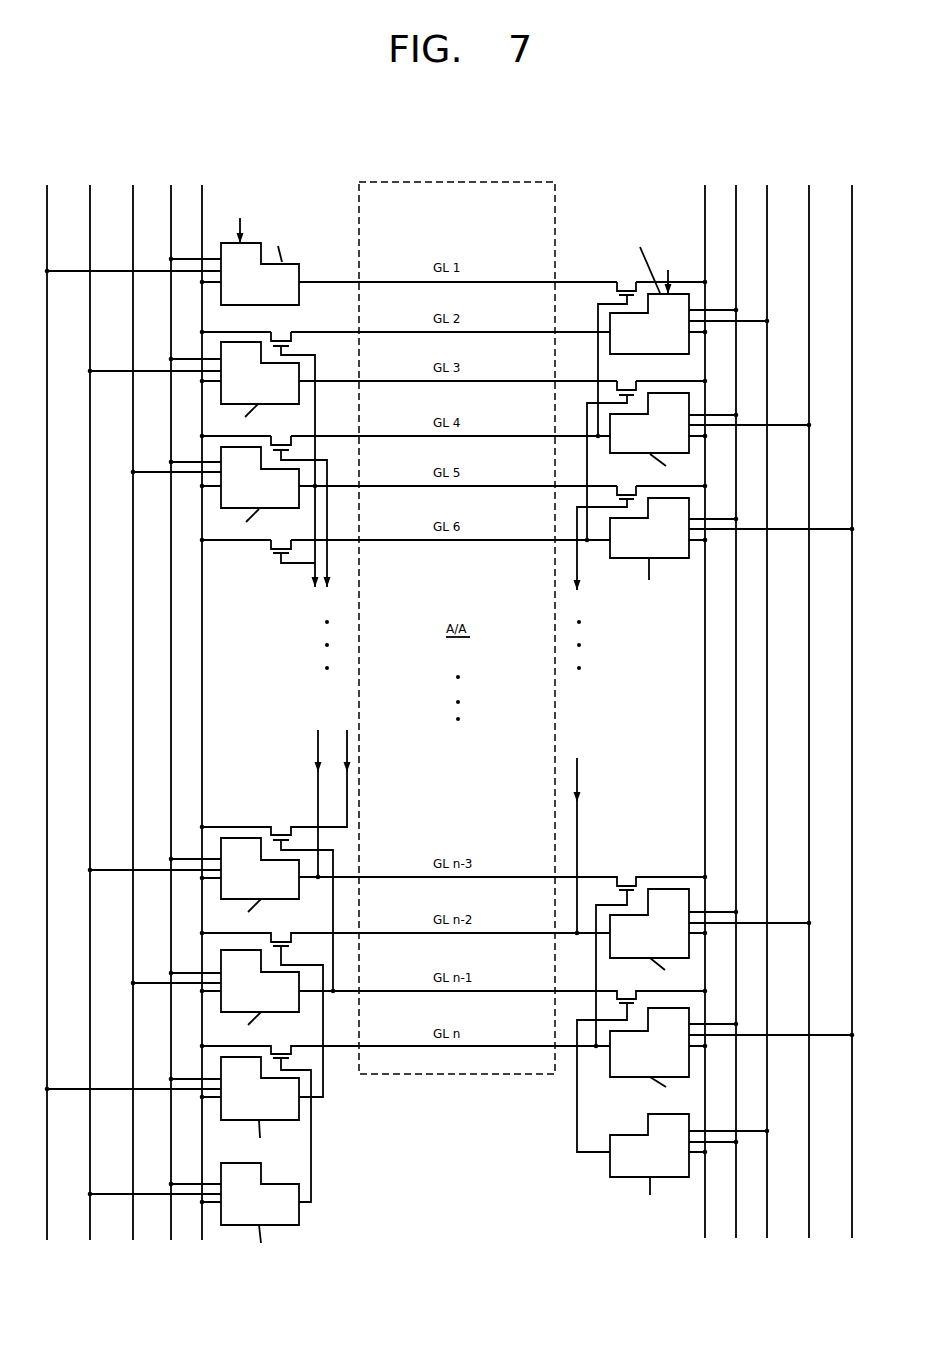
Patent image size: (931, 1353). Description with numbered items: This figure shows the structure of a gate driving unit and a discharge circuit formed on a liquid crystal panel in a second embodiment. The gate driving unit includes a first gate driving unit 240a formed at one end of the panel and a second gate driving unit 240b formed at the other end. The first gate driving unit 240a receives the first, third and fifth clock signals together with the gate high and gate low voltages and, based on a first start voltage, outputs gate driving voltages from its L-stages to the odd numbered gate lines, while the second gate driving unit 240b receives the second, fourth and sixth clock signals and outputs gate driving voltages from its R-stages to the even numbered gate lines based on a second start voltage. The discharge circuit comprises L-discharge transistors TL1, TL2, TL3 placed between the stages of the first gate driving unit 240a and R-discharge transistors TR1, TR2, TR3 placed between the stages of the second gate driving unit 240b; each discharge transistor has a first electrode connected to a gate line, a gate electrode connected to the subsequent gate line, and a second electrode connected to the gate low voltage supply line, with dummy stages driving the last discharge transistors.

The first gate driving unit 240a is at (212, 677).
The second gate driving unit 240b is at (695, 677).
The L-discharge transistor TL1 is at (292, 451).
The L-discharge transistor TL2 is at (298, 503).
The L-discharge transistor TL3 is at (292, 542).
The R-discharge transistor TR1 is at (620, 351).
The R-discharge transistor TR2 is at (614, 453).
The R-discharge transistor TR3 is at (609, 530).